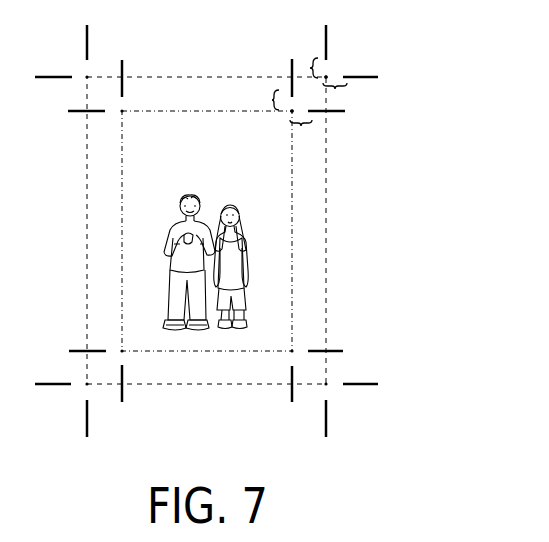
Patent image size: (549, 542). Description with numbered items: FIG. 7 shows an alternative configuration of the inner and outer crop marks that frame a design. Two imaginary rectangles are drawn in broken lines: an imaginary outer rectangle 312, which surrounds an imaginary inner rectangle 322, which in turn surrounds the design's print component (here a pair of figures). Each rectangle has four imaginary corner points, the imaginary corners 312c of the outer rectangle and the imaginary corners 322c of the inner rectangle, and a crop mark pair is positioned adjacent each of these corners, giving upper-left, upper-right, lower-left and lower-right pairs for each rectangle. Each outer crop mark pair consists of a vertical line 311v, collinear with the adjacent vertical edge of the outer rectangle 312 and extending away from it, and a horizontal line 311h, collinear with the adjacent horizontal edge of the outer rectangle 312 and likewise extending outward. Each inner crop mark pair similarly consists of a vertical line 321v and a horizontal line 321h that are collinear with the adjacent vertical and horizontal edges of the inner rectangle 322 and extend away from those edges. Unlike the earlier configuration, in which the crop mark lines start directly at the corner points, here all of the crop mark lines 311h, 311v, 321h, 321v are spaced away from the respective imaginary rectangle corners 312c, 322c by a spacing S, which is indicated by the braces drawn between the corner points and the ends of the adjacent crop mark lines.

The imaginary outer rectangle 312 is at (327, 228).
The imaginary inner rectangle 322 is at (293, 252).
The vertical line 311v is at (326, 50).
The horizontal line 311h is at (367, 78).
The vertical line 321v is at (292, 63).
The horizontal line 321h is at (333, 111).
The imaginary corner 312c is at (327, 78).
The imaginary corner 322c is at (290, 113).
The spacing S is at (308, 68).